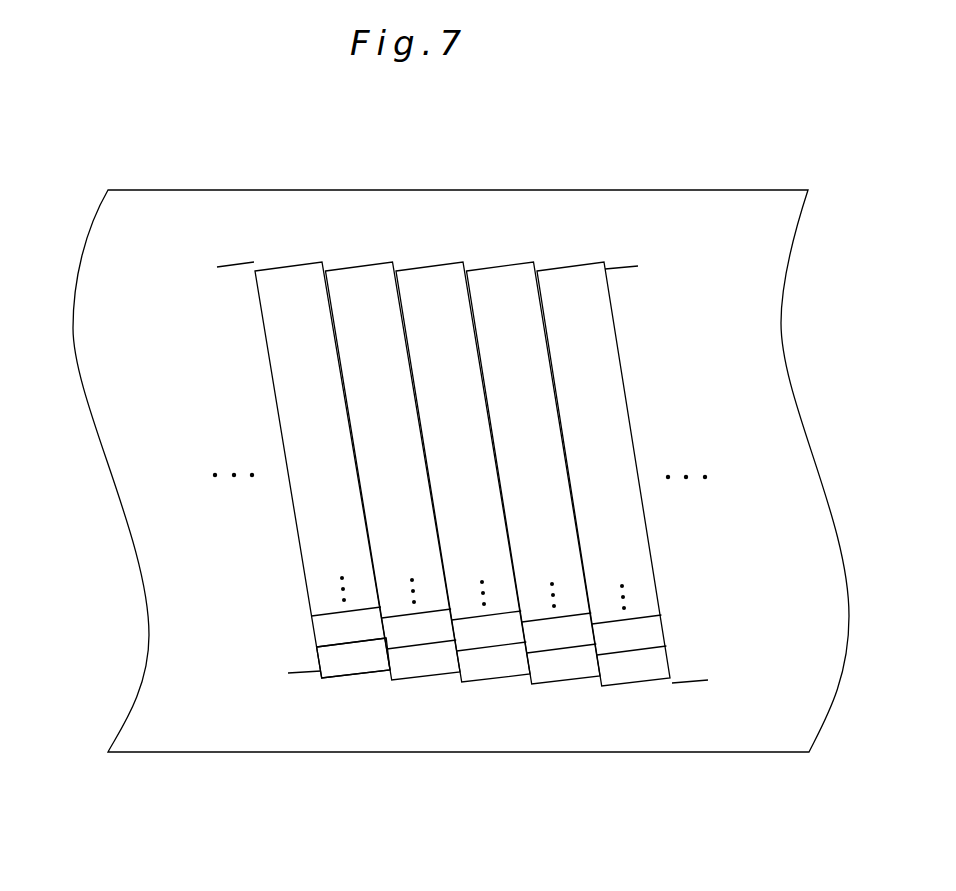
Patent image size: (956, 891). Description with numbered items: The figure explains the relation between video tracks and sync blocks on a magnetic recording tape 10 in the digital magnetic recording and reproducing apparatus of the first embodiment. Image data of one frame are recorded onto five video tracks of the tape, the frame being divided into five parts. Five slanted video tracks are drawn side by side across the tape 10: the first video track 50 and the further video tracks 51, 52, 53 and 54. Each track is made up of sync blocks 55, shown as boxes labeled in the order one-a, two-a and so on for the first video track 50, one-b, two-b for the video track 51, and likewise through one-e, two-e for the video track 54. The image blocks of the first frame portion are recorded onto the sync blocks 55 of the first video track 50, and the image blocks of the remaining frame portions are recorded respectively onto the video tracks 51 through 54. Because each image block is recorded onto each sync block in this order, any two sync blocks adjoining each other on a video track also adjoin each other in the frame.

The magnetic recording tape 10 is at (225, 190).
The first video track 50 is at (297, 278).
The video track 51 is at (370, 278).
The video track 52 is at (446, 278).
The video track 53 is at (517, 278).
The video track 54 is at (593, 278).
The sync block 55 is at (331, 675).